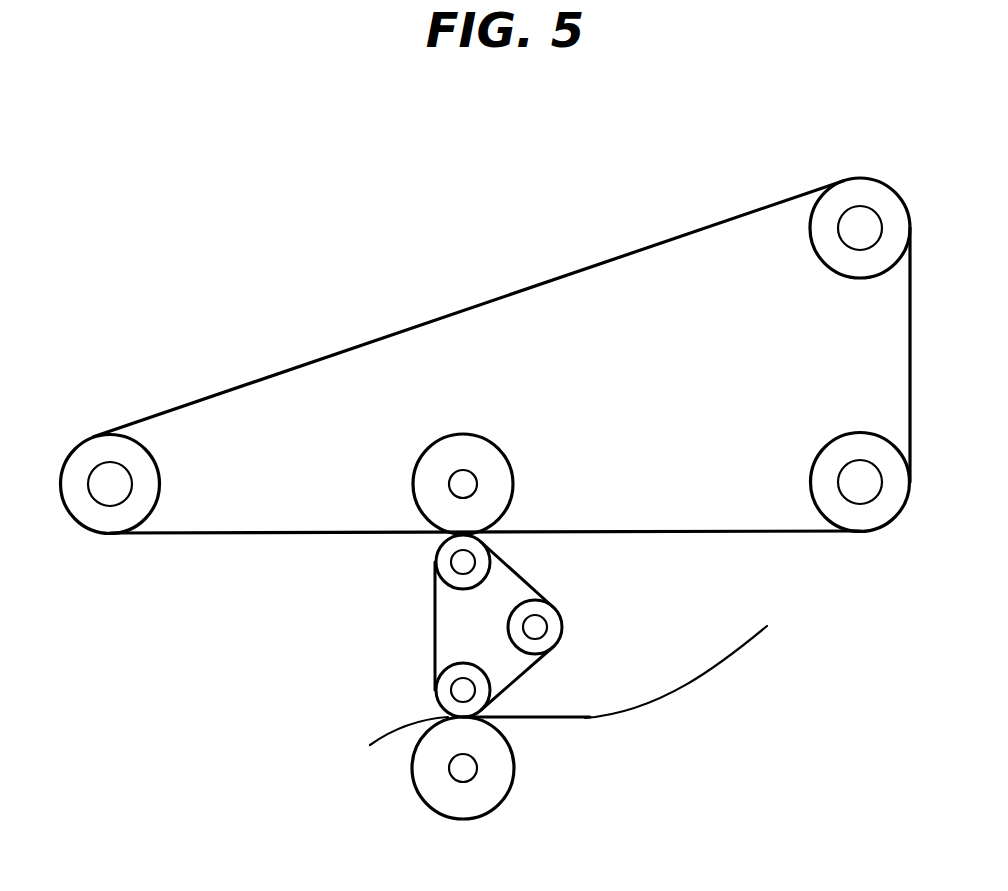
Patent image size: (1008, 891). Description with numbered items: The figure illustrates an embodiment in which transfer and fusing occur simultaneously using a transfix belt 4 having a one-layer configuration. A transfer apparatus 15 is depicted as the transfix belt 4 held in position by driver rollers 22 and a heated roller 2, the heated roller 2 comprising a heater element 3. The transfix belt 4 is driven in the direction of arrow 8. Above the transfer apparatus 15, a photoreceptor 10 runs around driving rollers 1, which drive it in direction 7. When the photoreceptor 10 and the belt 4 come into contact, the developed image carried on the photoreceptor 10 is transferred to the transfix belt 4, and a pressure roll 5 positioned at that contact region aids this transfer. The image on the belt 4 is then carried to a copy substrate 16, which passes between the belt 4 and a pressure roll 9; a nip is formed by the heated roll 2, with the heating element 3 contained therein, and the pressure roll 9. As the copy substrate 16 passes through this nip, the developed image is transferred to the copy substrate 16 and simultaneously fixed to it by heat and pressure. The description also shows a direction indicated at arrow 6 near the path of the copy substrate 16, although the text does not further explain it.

The driving rollers 1 is at (862, 188).
The heated roller 2 is at (428, 679).
The heater element 3 is at (462, 688).
The transfix belt 4 is at (435, 597).
The pressure roll 5 is at (488, 455).
The sheet conveying direction 6 is at (610, 733).
The direction 7 is at (655, 514).
The arrow 8 is at (560, 585).
The pressure roll 9 is at (455, 805).
The photoreceptor 10 is at (182, 556).
The transfer apparatus 15 is at (652, 598).
The copy substrate 16 is at (698, 675).
The driver rollers 22 is at (440, 552).